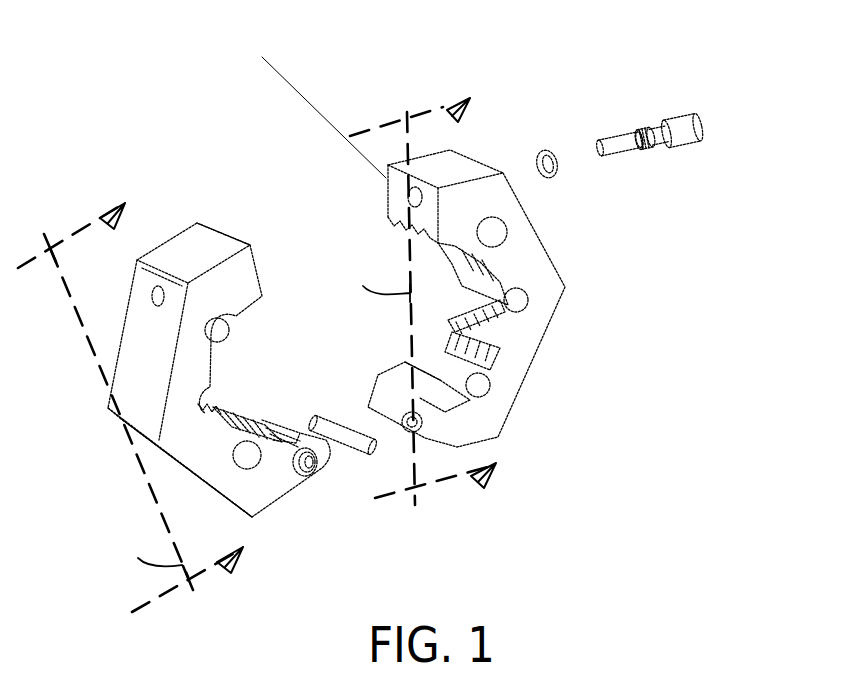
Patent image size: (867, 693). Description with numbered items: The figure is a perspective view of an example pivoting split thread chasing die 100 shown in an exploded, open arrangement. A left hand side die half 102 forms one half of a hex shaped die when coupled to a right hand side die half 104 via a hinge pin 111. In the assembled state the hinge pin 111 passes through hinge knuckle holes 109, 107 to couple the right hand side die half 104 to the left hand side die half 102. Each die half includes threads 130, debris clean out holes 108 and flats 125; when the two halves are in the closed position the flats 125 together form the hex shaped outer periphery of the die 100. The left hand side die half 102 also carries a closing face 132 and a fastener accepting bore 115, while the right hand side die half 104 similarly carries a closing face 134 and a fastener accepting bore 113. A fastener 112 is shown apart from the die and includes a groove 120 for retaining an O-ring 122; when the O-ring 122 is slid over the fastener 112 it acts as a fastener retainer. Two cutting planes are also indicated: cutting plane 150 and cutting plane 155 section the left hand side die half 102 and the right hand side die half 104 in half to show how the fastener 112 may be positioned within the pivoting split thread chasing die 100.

The pivoting split thread chasing die 100 is at (98, 132).
The left hand side die half 102 is at (118, 345).
The right hand side die half 104 is at (565, 287).
The hinge knuckle hole 107 is at (417, 428).
The debris clean out holes 108 is at (248, 455).
The hinge knuckle hole 109 is at (302, 462).
The hinge pin 111 is at (345, 450).
The fastener 112 is at (657, 147).
The fastener accepting bore 113 is at (262, 57).
The fastener accepting bore 115 is at (150, 296).
The groove 120 is at (642, 130).
The O-ring 122 is at (546, 150).
The flats 125 is at (210, 264).
The threads 130 is at (268, 428).
The closing face 132 is at (232, 212).
The closing face 134 is at (388, 202).
The cutting plane 150 is at (163, 517).
The cutting plane 155 is at (408, 262).